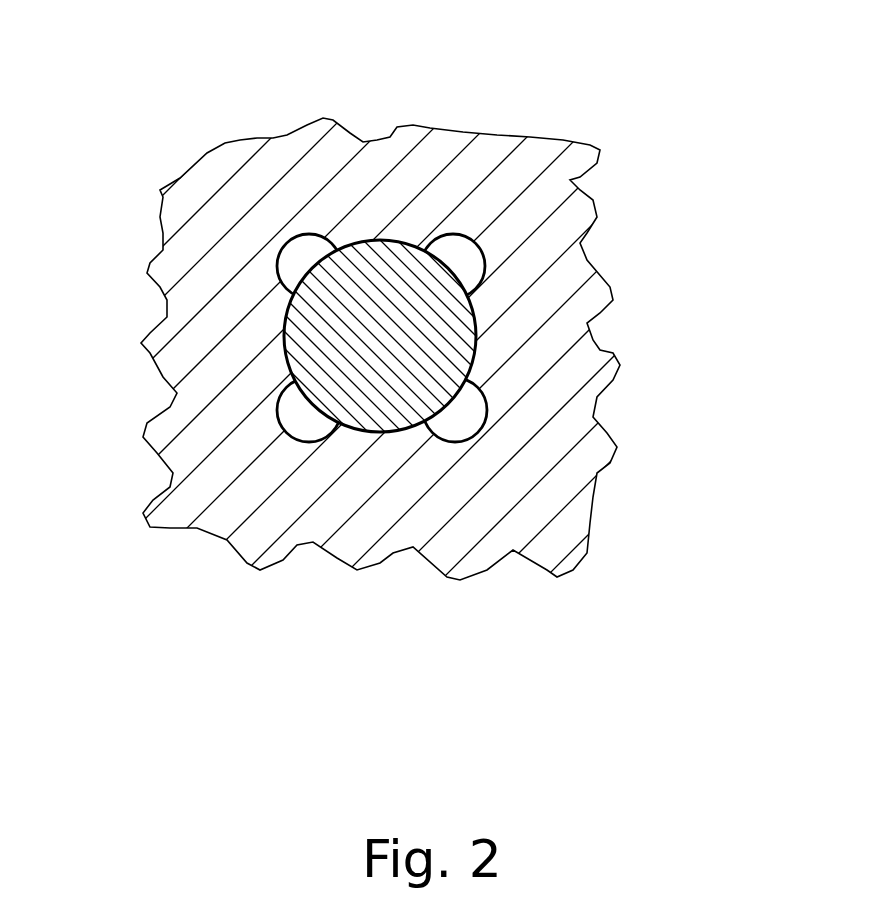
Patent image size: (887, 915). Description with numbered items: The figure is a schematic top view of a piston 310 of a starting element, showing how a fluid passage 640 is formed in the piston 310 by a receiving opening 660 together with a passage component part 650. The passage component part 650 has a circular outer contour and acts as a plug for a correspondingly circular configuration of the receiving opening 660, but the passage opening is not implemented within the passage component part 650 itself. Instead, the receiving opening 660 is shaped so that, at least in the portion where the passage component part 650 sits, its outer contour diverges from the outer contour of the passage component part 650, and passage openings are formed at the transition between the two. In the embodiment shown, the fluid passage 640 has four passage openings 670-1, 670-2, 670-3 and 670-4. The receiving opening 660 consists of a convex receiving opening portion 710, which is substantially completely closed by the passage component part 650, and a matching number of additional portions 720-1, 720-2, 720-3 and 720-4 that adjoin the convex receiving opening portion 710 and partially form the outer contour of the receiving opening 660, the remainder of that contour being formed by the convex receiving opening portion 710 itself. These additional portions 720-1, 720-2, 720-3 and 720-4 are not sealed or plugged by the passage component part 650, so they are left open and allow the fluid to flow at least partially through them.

The piston 310 is at (228, 198).
The fluid passage 640 is at (505, 250).
The passage component part 650 is at (433, 330).
The receiving opening 660 is at (483, 289).
The passage opening 670-1 is at (465, 410).
The passage opening 670-2 is at (312, 423).
The passage opening 670-3 is at (292, 278).
The passage opening 670-4 is at (469, 260).
The convex receiving opening portion 710 is at (389, 444).
The additional portion 720-1 is at (452, 432).
The additional portion 720-2 is at (293, 408).
The additional portion 720-3 is at (295, 262).
The additional portion 720-4 is at (449, 247).